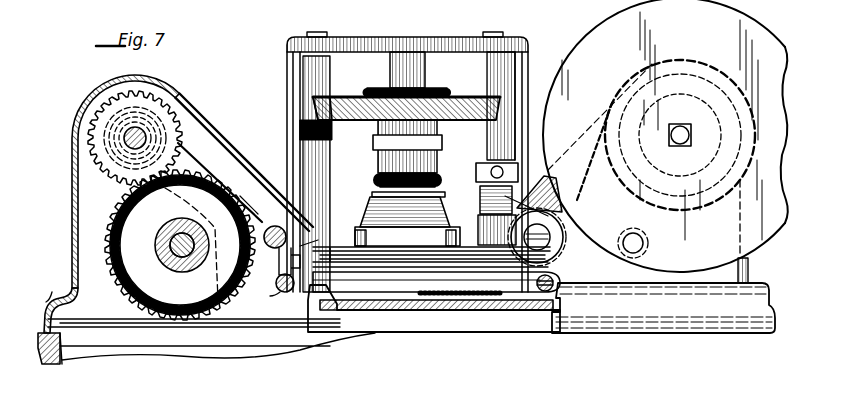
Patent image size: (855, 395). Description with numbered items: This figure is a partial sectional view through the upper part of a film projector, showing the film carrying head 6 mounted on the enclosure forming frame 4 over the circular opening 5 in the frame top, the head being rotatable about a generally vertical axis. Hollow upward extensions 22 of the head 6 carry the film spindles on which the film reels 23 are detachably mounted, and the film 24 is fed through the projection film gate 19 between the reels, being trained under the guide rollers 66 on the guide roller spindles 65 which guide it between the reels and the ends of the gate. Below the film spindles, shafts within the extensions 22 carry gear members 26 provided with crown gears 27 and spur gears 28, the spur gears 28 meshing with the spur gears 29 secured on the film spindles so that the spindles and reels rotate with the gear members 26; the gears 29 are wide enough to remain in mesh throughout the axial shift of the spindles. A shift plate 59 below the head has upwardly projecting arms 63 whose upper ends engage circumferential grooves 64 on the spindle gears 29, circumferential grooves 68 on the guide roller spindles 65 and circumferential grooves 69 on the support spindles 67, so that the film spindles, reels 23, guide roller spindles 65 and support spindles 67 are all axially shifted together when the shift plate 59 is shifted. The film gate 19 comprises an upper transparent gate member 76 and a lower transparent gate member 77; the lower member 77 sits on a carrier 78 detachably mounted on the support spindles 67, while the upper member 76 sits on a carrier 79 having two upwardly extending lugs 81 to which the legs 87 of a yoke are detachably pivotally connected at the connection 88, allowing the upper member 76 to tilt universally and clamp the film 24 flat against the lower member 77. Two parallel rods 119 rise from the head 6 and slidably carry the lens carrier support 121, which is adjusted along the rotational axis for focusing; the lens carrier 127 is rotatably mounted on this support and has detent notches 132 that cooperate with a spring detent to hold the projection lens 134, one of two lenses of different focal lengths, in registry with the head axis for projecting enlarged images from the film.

The enclosure forming frame 4 is at (40, 356).
The circular opening 5 is at (68, 348).
The film carrying head 6 is at (52, 292).
The projection film gate 19 is at (404, 263).
The hollow upward extensions 22 is at (74, 122).
The film reels 23 is at (594, 40).
The film 24 is at (560, 228).
The gear members 26 is at (106, 218).
The crown gears 27 is at (124, 226).
The spur gears 28 is at (112, 292).
The spur gears 29 is at (112, 110).
The shift plate 59 is at (300, 316).
The upwardly projecting arms 63 is at (200, 168).
The circumferential grooves 64 is at (180, 97).
The guide roller spindles 65 is at (247, 194).
The guide rollers 66 is at (556, 200).
The support spindles 67 is at (288, 296).
The circumferential grooves 68 is at (272, 230).
The circumferential grooves 69 is at (277, 282).
The upper transparent gate member 76 is at (360, 268).
The lower transparent gate member 77 is at (446, 268).
The carrier 78 is at (530, 310).
The carrier 79 is at (508, 268).
The upwardly extending lugs 81 is at (330, 252).
The legs 87 is at (446, 180).
The pivotal connection 88 is at (446, 240).
The parallel rods 119 is at (296, 80).
The lens carrier support 121 is at (364, 38).
The lens carrier 127 is at (314, 108).
The detent notches 132 is at (400, 106).
The projection lens 134 is at (445, 92).